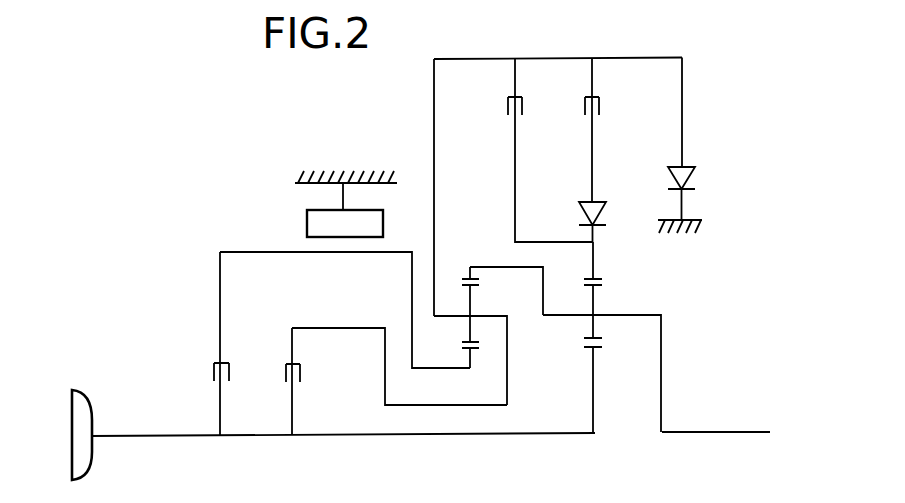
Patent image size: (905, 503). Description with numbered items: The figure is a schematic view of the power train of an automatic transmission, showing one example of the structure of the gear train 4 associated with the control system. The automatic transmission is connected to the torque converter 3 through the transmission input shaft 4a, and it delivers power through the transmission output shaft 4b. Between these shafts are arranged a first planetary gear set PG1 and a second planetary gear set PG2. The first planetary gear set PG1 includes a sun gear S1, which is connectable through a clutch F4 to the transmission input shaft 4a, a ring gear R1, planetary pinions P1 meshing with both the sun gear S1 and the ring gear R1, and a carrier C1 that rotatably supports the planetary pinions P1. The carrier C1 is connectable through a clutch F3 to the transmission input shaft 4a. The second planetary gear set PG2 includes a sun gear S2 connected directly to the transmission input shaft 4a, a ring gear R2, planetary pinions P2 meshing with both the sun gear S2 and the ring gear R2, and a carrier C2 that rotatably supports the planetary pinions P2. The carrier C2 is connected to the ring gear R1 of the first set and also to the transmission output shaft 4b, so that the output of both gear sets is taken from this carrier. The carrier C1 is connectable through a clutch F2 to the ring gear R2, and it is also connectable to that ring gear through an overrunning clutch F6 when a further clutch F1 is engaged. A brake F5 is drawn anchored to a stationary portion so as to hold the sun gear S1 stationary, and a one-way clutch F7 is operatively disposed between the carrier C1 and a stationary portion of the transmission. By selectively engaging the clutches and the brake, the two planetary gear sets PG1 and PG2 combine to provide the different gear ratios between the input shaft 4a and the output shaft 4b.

The torque converter 3 is at (88, 395).
The gear train 4 is at (611, 55).
The transmission input shaft 4a is at (150, 441).
The transmission output shaft 4b is at (720, 434).
The clutch F1 is at (585, 103).
The clutch F2 is at (508, 107).
The clutch F3 is at (301, 377).
The clutch F4 is at (214, 374).
The brake F5 is at (307, 226).
The overrunning clutch F6 is at (606, 206).
The one-way clutch F7 is at (695, 175).
The ring gear R1 is at (470, 270).
The planetary pinions P1 is at (471, 300).
The sun gear S1 is at (472, 356).
The carrier C1 is at (508, 330).
The ring gear R2 is at (595, 274).
The planetary pinions P2 is at (595, 300).
The sun gear S2 is at (595, 364).
The carrier C2 is at (662, 313).
The first planetary gear set PG1 is at (475, 350).
The second planetary gear set PG2 is at (657, 337).